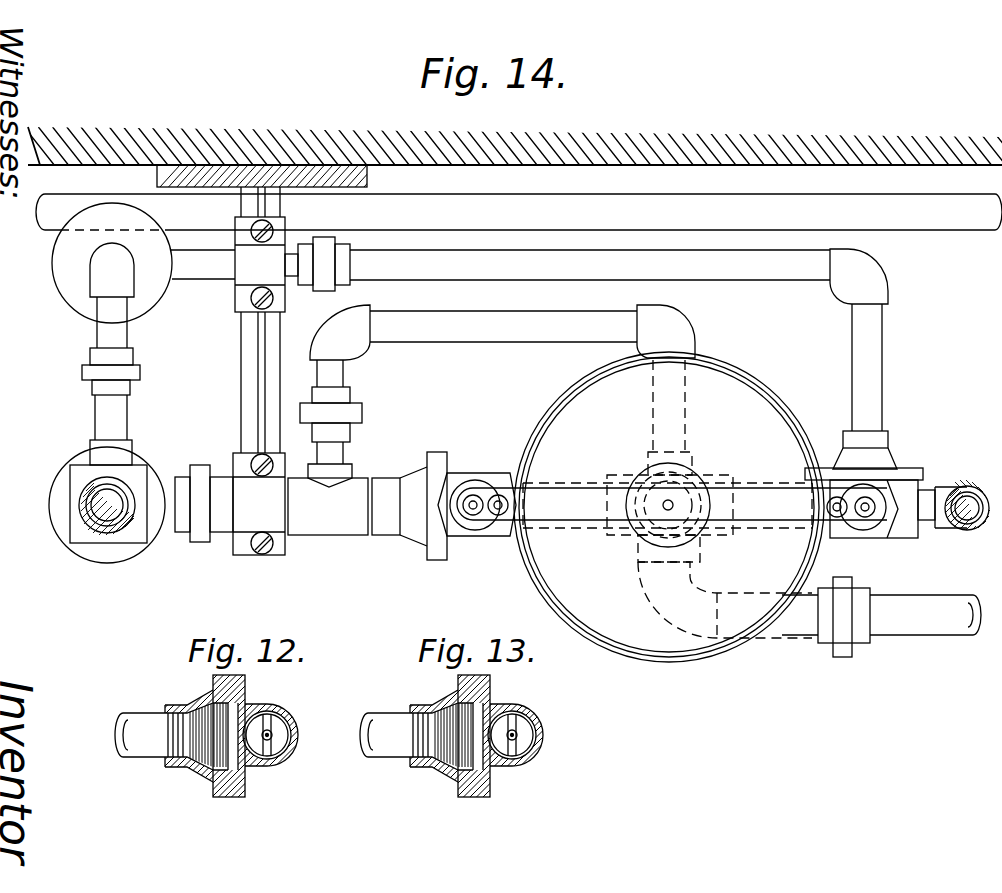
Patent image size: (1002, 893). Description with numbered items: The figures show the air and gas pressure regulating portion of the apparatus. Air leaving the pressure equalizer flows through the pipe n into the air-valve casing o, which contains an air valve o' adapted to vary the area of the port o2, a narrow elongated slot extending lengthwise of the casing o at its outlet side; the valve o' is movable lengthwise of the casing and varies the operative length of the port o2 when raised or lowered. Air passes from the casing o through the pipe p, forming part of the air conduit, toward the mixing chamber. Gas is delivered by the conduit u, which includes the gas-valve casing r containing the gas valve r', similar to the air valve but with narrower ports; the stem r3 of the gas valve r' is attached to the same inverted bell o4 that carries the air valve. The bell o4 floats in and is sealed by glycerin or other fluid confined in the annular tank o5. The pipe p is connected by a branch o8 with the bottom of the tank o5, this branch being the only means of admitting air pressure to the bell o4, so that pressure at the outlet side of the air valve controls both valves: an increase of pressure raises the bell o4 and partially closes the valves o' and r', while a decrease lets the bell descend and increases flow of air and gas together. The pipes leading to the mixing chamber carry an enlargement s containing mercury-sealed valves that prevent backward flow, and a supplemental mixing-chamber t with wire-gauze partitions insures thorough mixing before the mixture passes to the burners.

In FIG. 14, the enlargement s is at (166, 292).
In FIG. 14, the supplemental mixing-chamber t is at (151, 474).
In FIG. 14, the gas conduit u is at (716, 272).
In FIG. 14, the gas-valve casing r is at (897, 421).
In FIG. 13, the gas-valve casing r is at (476, 738).
In FIG. 13, the gas-valve r' is at (531, 743).
In FIG. 13, the stem of the gas-valve r3 is at (537, 710).
In FIG. 14, the air-valve casing o is at (477, 525).
In FIG. 12, the air-valve casing o is at (294, 735).
In FIG. 12, the air valve o' is at (282, 720).
In FIG. 12, the port o2 is at (236, 735).
In FIG. 14, the inverted cup or bell o4 is at (553, 432).
In FIG. 14, the annular tank o5 is at (569, 389).
In FIG. 14, the branch o8 is at (446, 336).
In FIG. 14, the pipe n is at (917, 622).
In FIG. 12, the pipe p is at (141, 723).